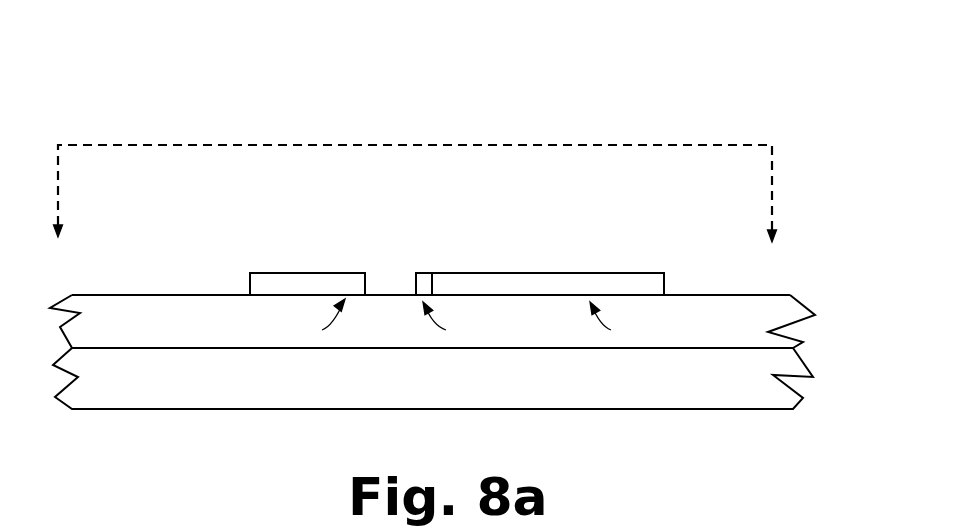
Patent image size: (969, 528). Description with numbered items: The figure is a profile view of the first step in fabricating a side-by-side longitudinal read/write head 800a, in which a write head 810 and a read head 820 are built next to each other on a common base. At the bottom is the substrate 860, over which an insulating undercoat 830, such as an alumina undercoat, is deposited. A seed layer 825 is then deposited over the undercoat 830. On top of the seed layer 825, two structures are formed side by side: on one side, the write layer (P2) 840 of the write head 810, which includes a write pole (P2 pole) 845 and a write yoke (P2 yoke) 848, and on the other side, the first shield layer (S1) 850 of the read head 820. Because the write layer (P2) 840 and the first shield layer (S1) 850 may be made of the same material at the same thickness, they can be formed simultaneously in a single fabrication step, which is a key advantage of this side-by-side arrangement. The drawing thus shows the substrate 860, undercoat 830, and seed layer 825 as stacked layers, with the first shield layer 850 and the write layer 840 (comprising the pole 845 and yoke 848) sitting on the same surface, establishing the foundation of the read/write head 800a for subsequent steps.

The side-by-side longitudinal read/write head 800a is at (650, 88).
The write head 810 is at (684, 247).
The read head 820 is at (311, 271).
The seed layer 825 is at (147, 293).
The insulating undercoat 830 is at (213, 313).
The write layer (P2) 840 is at (521, 271).
The write pole (P2 pole) 845 is at (423, 274).
The write yoke (P2 yoke) 848 is at (622, 283).
The first shield layer (S1) 850 is at (264, 278).
The substrate 860 is at (160, 411).